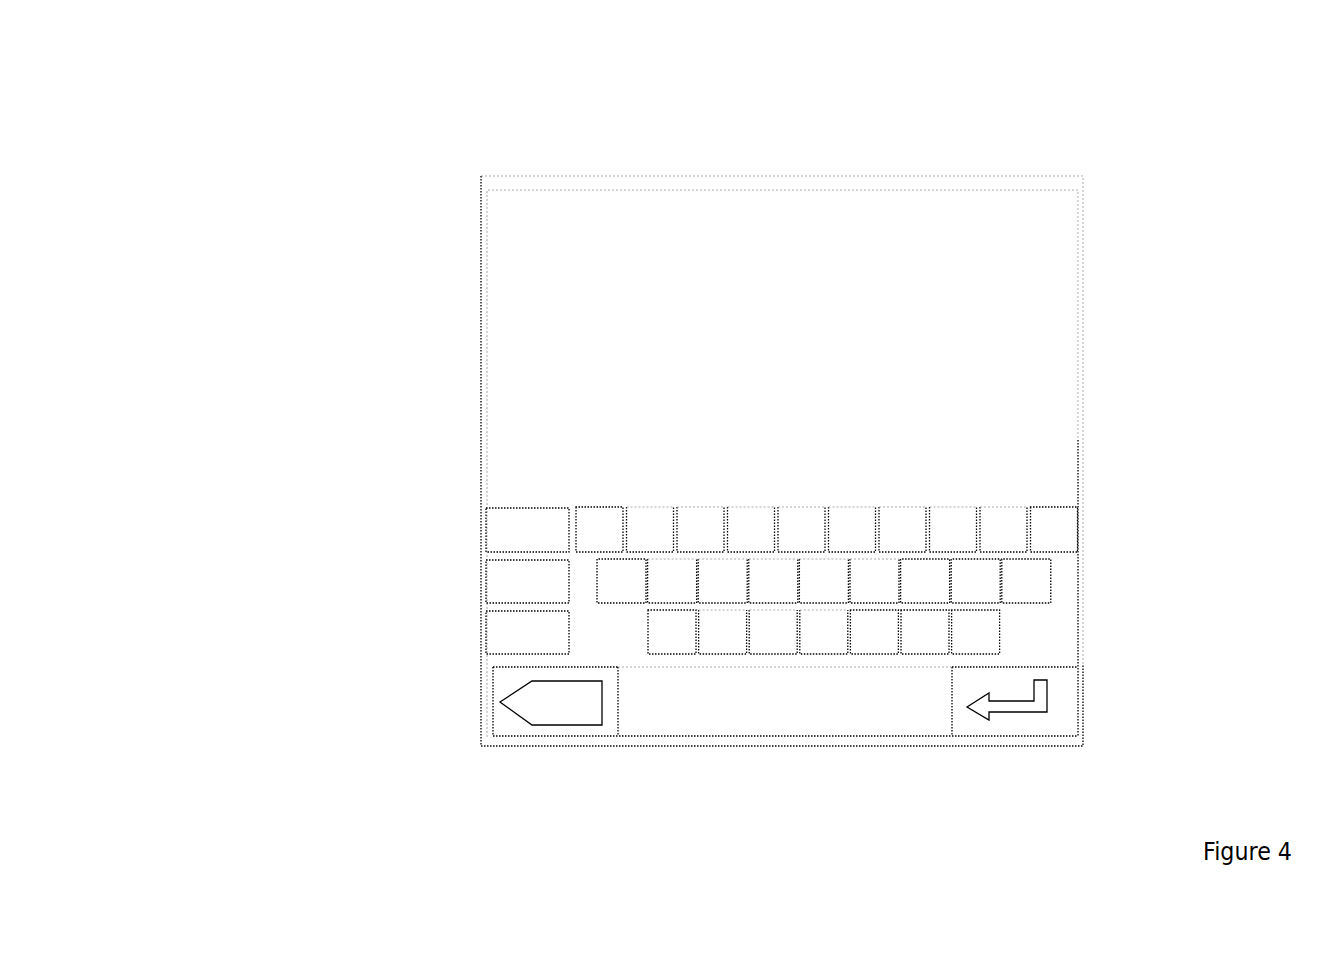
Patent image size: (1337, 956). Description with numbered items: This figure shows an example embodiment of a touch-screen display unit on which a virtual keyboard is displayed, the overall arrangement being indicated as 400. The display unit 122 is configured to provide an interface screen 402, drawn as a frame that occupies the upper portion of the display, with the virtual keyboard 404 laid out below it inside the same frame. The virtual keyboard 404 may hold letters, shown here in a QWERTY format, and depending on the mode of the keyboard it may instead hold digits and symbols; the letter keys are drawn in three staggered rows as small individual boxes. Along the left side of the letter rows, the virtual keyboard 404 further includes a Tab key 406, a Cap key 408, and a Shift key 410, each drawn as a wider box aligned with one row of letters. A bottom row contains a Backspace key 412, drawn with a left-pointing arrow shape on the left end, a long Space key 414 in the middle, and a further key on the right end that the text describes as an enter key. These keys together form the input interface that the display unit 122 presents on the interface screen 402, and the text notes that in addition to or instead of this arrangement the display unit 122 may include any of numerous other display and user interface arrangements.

The virtual keyboard user interface 400 is at (398, 138).
The display unit 122 is at (1124, 300).
The interface screen 402 is at (1023, 460).
The virtual keyboard 404 is at (1055, 622).
The Tab key 406 is at (488, 530).
The Cap key 408 is at (488, 583).
The Shift key 410 is at (489, 632).
The Backspace key 412 is at (505, 712).
The Space key 414 is at (842, 715).